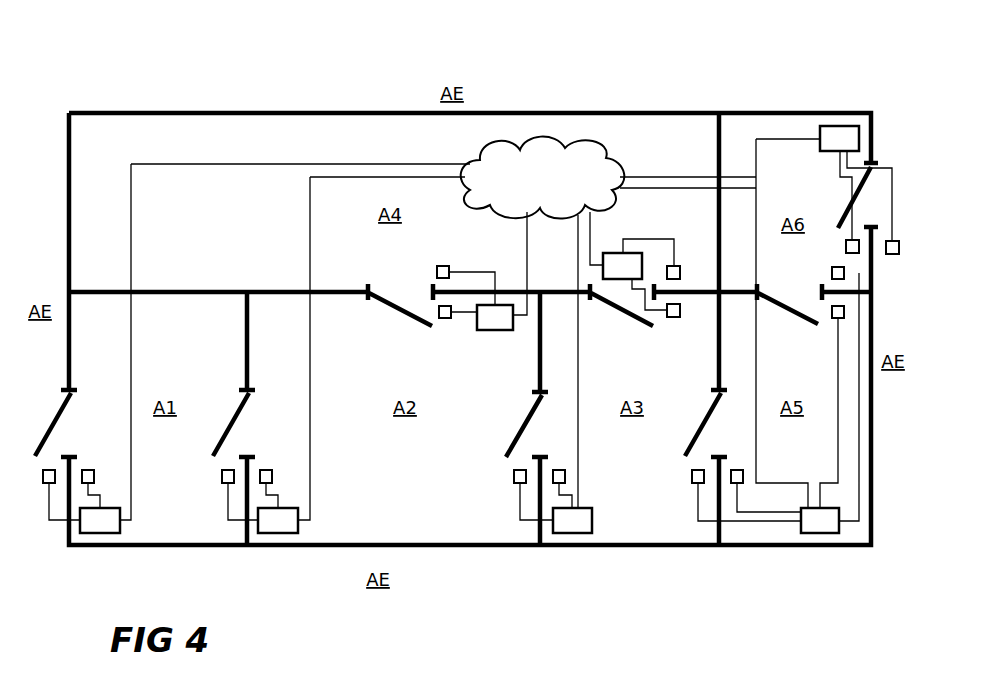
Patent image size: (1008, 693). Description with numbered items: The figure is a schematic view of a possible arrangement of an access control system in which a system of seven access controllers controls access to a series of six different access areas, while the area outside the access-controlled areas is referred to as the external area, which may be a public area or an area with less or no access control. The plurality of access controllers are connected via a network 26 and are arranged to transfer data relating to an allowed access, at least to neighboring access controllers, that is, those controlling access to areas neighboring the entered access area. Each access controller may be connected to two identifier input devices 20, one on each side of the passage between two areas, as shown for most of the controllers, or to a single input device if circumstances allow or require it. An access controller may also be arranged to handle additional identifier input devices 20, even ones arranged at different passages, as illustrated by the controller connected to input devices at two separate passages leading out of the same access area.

The identifier input device 20 is at (66, 456).
The network 26 is at (543, 178).